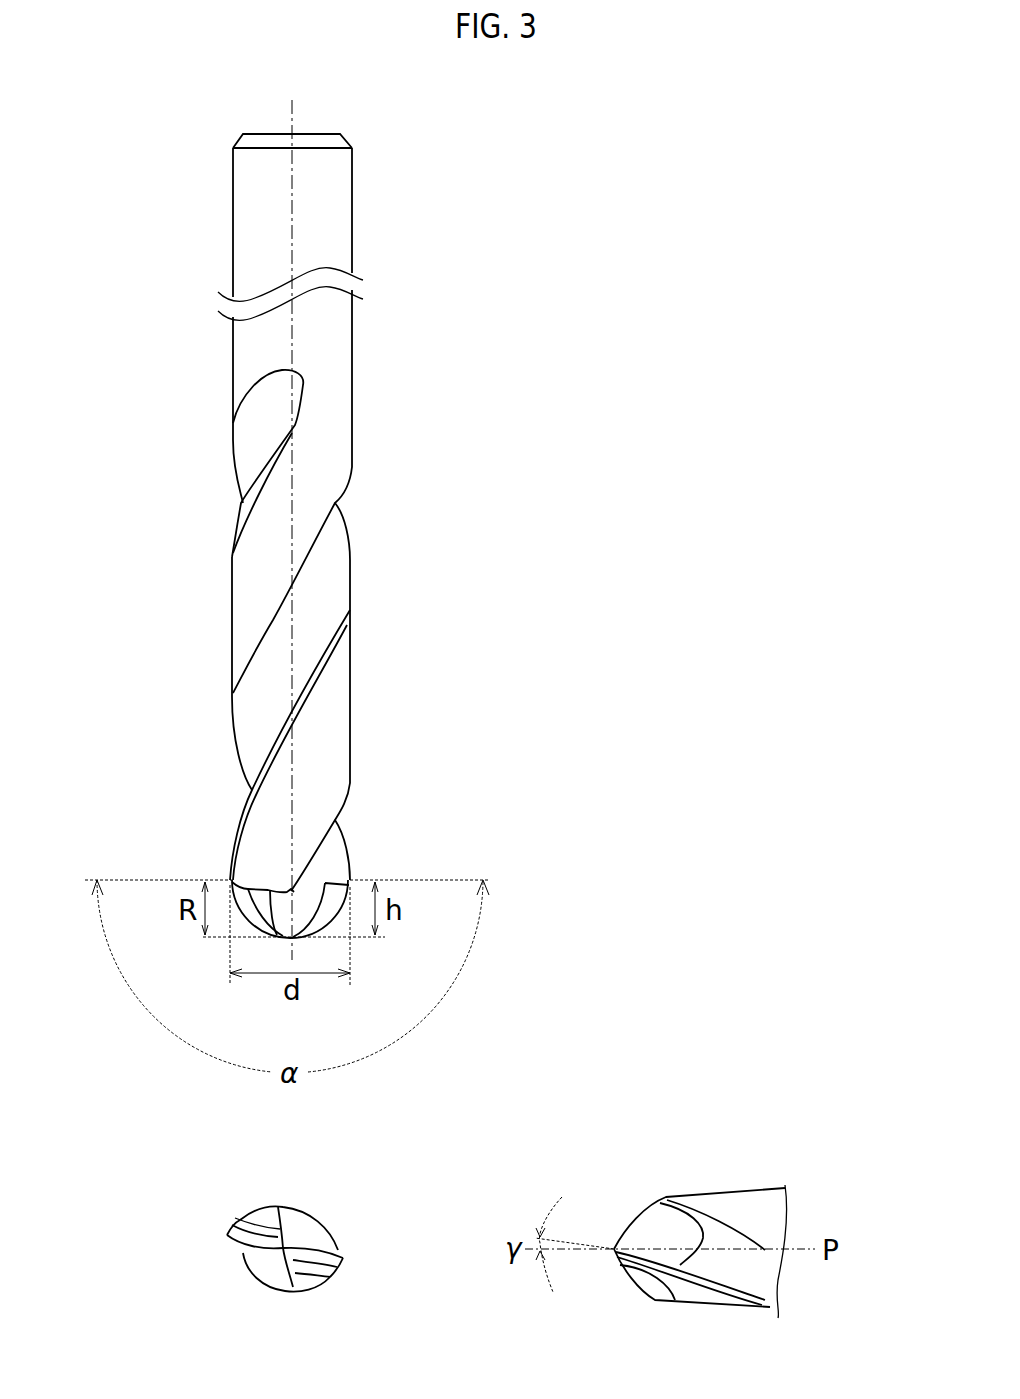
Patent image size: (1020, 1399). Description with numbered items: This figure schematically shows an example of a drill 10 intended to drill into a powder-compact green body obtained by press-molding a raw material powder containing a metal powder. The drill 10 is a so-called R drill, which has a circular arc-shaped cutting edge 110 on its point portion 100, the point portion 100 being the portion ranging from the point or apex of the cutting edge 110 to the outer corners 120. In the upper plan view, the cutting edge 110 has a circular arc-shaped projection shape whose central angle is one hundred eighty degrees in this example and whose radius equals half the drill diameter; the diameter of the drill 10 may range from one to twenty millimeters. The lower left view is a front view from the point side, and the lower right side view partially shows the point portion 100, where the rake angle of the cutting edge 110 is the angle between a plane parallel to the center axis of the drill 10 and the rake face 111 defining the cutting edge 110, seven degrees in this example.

The drill 10 is at (362, 408).
The point portion 100 is at (410, 880).
The cutting edge 110 is at (267, 933).
The rake face 111 is at (302, 905).
The outer corners 120 is at (232, 882).